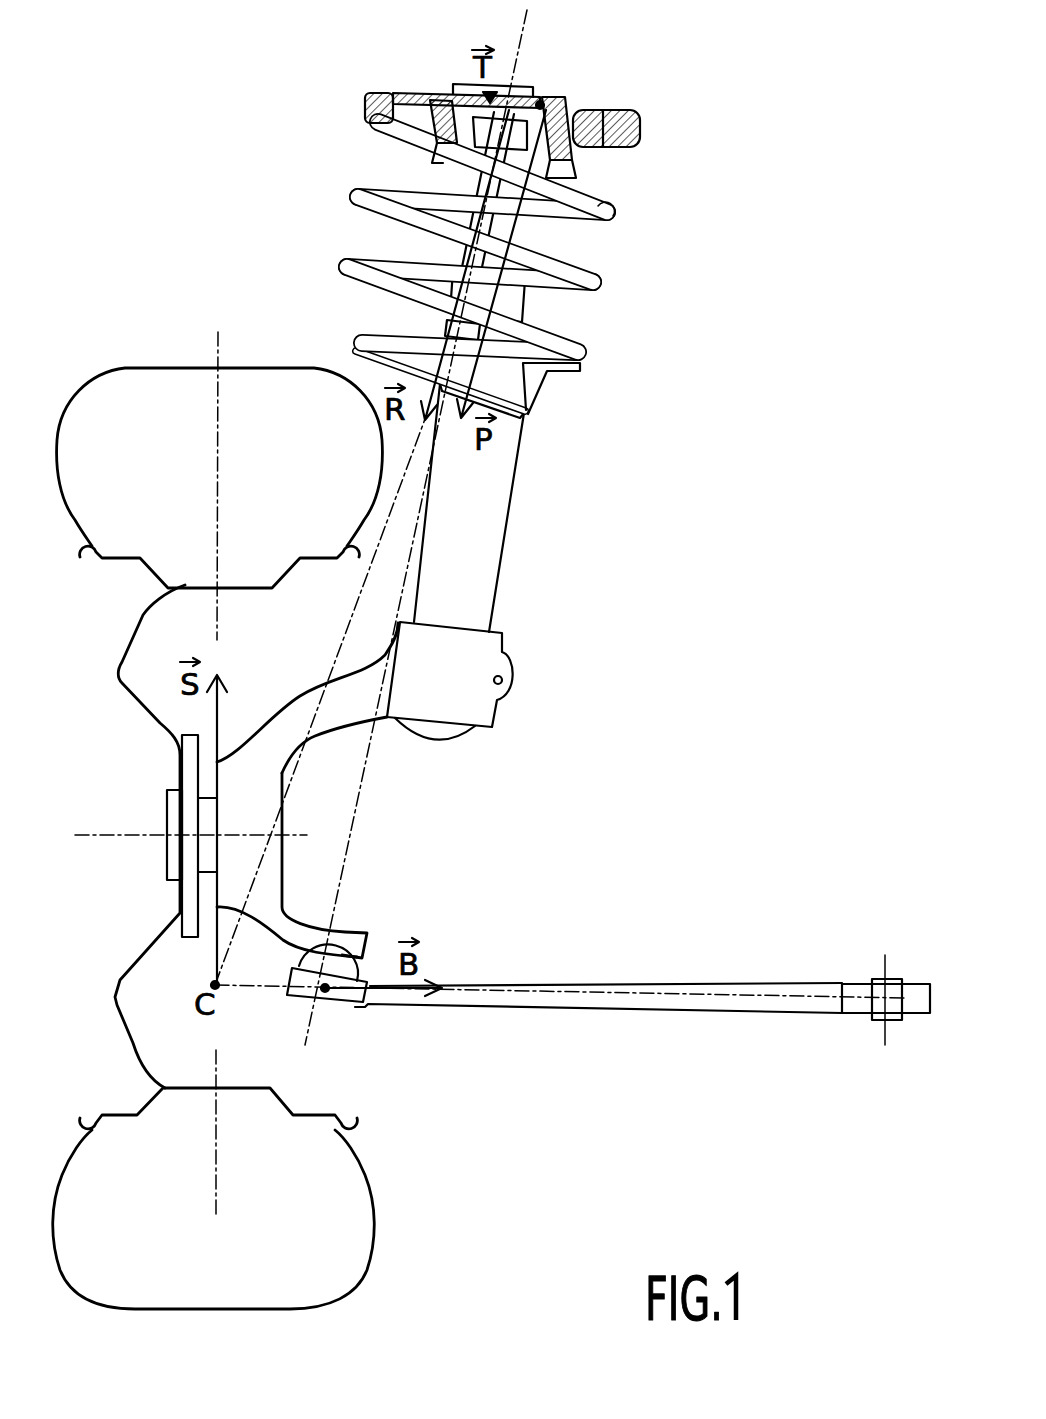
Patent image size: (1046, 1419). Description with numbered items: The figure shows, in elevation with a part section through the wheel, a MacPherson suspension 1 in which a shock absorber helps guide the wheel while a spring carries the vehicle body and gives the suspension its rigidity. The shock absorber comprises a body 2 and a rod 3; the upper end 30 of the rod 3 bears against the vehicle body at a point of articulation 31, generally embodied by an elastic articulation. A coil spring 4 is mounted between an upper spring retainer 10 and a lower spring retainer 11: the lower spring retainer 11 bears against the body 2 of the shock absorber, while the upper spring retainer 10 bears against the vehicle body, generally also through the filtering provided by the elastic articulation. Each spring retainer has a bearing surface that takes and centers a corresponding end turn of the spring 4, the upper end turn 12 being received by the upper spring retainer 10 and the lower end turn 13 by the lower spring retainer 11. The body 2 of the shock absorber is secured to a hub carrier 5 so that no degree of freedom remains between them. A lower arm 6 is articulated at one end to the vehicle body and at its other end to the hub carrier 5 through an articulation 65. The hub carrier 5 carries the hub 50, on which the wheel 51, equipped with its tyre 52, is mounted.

The suspension assembly 1 is at (645, 422).
The body 2 is at (465, 523).
The rod 3 is at (500, 208).
The coil spring 4 is at (607, 222).
The hub carrier 5 is at (335, 713).
The lower arm 6 is at (620, 1000).
The upper spring retainer 10 is at (607, 107).
The lower spring retainer 11 is at (547, 388).
The end turn 12 is at (597, 137).
The end turn 13 is at (523, 413).
The upper end 30 is at (560, 102).
The point of articulation 31 is at (445, 92).
The hub 50 is at (190, 850).
The wheel 51 is at (283, 1100).
The tyre 52 is at (382, 1200).
The articulation 65 is at (342, 1000).